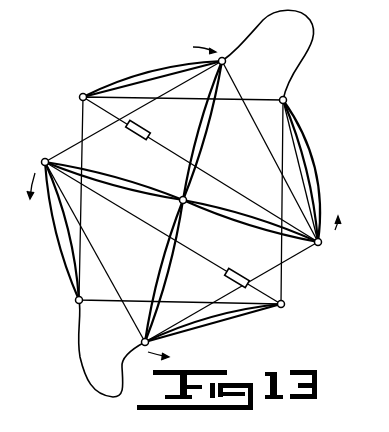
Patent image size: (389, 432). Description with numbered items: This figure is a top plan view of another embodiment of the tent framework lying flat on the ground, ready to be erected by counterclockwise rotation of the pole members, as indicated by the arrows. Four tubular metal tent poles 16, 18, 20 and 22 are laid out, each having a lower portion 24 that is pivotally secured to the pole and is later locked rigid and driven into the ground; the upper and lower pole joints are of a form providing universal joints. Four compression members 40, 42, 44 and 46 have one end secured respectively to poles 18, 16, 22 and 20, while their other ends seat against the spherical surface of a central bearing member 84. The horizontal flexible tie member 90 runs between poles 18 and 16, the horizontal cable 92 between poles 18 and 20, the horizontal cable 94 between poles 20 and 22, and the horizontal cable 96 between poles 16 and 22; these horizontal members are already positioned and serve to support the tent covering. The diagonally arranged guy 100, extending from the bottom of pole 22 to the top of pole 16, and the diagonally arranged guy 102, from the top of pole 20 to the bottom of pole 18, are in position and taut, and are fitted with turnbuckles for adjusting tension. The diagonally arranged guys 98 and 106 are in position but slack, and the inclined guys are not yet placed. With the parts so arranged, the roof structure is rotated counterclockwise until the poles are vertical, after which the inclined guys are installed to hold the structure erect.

The tent pole 16 is at (311, 168).
The tent pole 18 is at (233, 324).
The tent pole 20 is at (62, 259).
The tent pole 22 is at (142, 73).
The lower portion 24 is at (80, 95).
The compression member 40 is at (157, 282).
The compression member 42 is at (228, 222).
The compression member 44 is at (205, 141).
The compression member 46 is at (114, 181).
The bearing member 84 is at (187, 200).
The horizontal flexible tie member 90 is at (290, 256).
The horizontal cable 92 is at (132, 320).
The horizontal cable 94 is at (70, 147).
The horizontal cable 96 is at (238, 88).
The diagonally arranged guy 98 is at (311, 50).
The diagonally arranged guy 100 is at (234, 186).
The diagonally arranged guy 102 is at (140, 223).
The diagonally arranged guy 106 is at (90, 392).